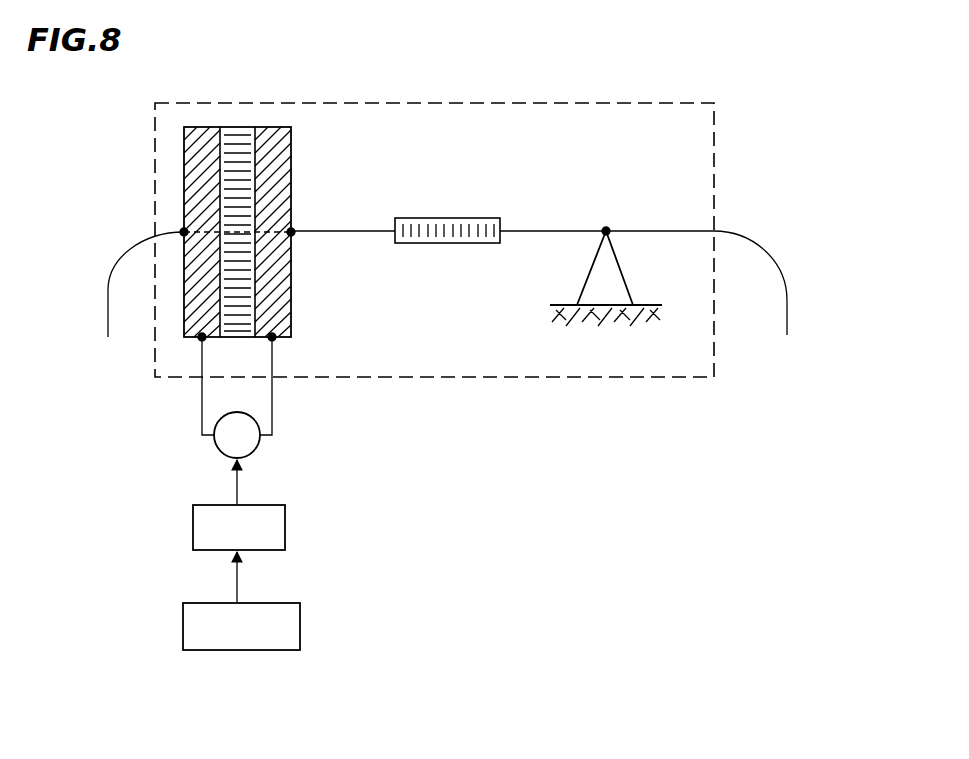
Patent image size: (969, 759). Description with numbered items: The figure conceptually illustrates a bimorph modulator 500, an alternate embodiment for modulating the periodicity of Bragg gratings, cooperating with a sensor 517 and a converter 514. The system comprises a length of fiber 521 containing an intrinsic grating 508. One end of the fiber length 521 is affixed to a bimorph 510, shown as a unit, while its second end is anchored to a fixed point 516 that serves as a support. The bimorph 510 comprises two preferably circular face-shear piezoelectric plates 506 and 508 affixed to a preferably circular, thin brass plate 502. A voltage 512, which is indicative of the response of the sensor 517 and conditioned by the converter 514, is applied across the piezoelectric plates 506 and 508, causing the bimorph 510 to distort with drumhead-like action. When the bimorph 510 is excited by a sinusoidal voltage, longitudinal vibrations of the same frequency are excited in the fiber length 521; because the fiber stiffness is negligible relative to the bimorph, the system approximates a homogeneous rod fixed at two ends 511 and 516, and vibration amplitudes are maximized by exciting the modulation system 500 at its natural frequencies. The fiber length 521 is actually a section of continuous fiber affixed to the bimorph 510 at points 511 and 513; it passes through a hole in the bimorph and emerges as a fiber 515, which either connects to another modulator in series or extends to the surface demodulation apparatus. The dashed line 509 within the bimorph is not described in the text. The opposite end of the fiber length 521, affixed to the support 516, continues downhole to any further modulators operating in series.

The bimorph modulator 500 is at (607, 100).
The brass plate 502 is at (233, 127).
The piezoelectric plate 506 is at (278, 320).
The piezoelectric plate / intrinsic grating 508 is at (196, 140).
The interface line 509 is at (262, 228).
The bimorph 510 is at (322, 159).
The affixing point 511 is at (291, 232).
The voltage 512 is at (257, 453).
The affixing point 513 is at (184, 232).
The converter 514 is at (285, 540).
The fiber 515 is at (108, 290).
The fixed point 516 is at (606, 231).
The sensor 517 is at (783, 278).
The length of fiber 521 is at (378, 232).